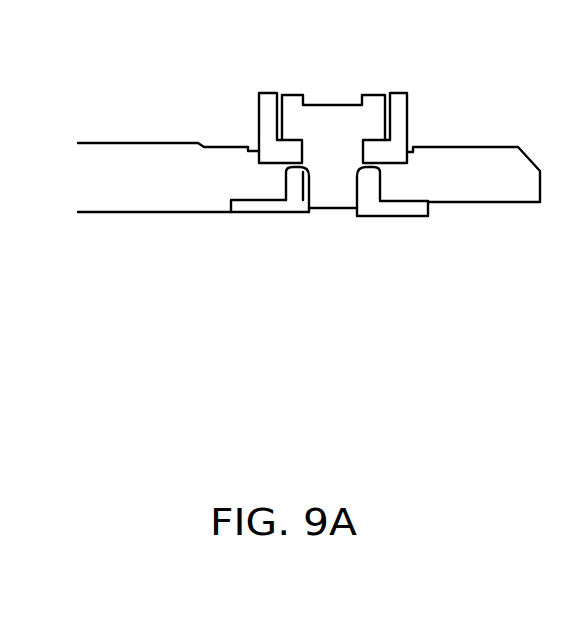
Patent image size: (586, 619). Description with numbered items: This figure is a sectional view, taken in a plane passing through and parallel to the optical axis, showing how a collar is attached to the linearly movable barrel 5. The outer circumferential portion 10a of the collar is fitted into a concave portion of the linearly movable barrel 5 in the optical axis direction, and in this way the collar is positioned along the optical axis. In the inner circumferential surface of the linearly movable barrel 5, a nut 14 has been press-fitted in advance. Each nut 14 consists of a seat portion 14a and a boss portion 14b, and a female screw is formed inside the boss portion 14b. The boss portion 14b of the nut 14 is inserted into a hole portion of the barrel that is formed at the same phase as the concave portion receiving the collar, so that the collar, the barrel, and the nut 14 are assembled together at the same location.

The outer circumferential portion 10a is at (408, 145).
The linearly movable barrel 5 is at (462, 170).
The nut 14 is at (217, 273).
The seat portion 14a is at (252, 207).
The boss portion 14b is at (294, 167).